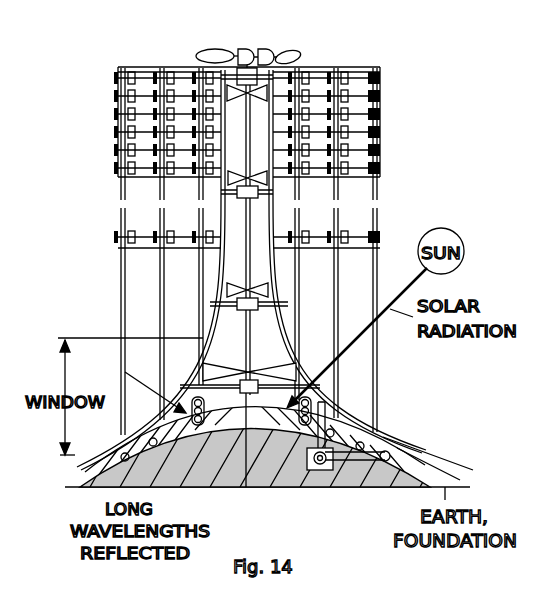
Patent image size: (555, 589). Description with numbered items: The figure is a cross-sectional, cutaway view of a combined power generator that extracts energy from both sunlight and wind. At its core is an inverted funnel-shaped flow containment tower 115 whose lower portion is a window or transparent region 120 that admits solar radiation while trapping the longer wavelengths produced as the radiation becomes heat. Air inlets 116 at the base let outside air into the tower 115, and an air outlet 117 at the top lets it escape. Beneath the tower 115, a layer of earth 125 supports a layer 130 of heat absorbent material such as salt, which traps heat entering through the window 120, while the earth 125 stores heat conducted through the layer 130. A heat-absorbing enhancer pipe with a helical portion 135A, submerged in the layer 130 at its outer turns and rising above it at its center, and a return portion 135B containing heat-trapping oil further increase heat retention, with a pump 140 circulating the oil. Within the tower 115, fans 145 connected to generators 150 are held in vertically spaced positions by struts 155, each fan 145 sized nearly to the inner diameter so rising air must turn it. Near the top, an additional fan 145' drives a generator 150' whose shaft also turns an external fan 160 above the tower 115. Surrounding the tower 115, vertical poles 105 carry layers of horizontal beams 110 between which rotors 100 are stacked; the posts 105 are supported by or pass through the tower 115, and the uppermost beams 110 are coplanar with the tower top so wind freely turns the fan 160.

The rotors 100 is at (382, 139).
The vertical poles or pylons 105 is at (379, 187).
The horizontal beams 110 is at (382, 92).
The flow containment tower 115 is at (203, 316).
The air inlets 116 is at (80, 466).
The air outlet 117 is at (299, 56).
The window or transparent region 120 is at (162, 405).
The layer of earth 125 is at (358, 487).
The layer of heat absorbent material 130 is at (403, 456).
The helical portion of heat-absorbing enhancer pipe 135A is at (283, 388).
The return portion of heat-absorbing enhancer pipe 135B is at (312, 401).
The pump 140 is at (322, 487).
The fans or turbines 145 is at (249, 262).
The additional fan 145' is at (247, 108).
The generators 150 is at (255, 354).
The generator 150' is at (268, 55).
The struts 155 is at (235, 196).
The external fan 160 is at (214, 49).